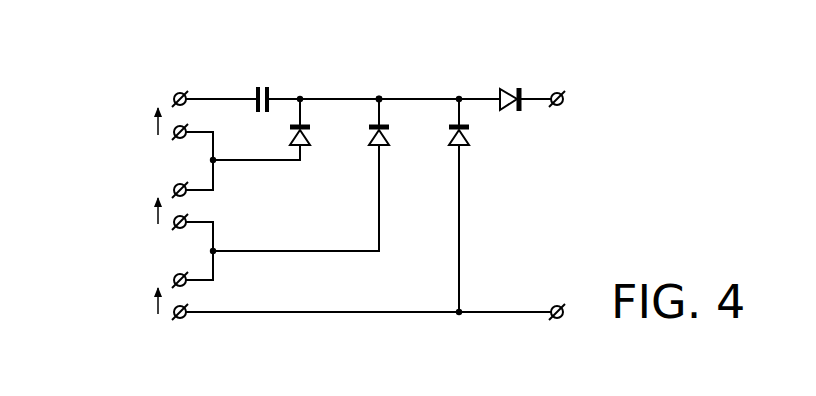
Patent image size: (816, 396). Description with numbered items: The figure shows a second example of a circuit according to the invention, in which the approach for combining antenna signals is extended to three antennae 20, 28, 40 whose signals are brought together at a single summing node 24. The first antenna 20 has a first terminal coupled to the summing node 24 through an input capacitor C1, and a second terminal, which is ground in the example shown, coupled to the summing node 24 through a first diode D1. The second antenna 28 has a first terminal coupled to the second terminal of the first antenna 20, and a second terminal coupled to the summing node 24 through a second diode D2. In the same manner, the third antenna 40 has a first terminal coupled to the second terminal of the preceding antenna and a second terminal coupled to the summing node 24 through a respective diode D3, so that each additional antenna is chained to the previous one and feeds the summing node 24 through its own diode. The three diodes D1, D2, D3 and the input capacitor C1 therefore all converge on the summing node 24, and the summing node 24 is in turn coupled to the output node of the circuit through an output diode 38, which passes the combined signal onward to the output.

The first antenna 20 is at (136, 116).
The second antenna 28 is at (136, 204).
The third antenna 40 is at (136, 295).
The summing node 24 is at (383, 90).
The output diode 38 is at (510, 88).
The input capacitor C1 is at (262, 86).
The first diode D1 is at (316, 138).
The second diode D2 is at (395, 138).
The respective diode D3 is at (475, 138).